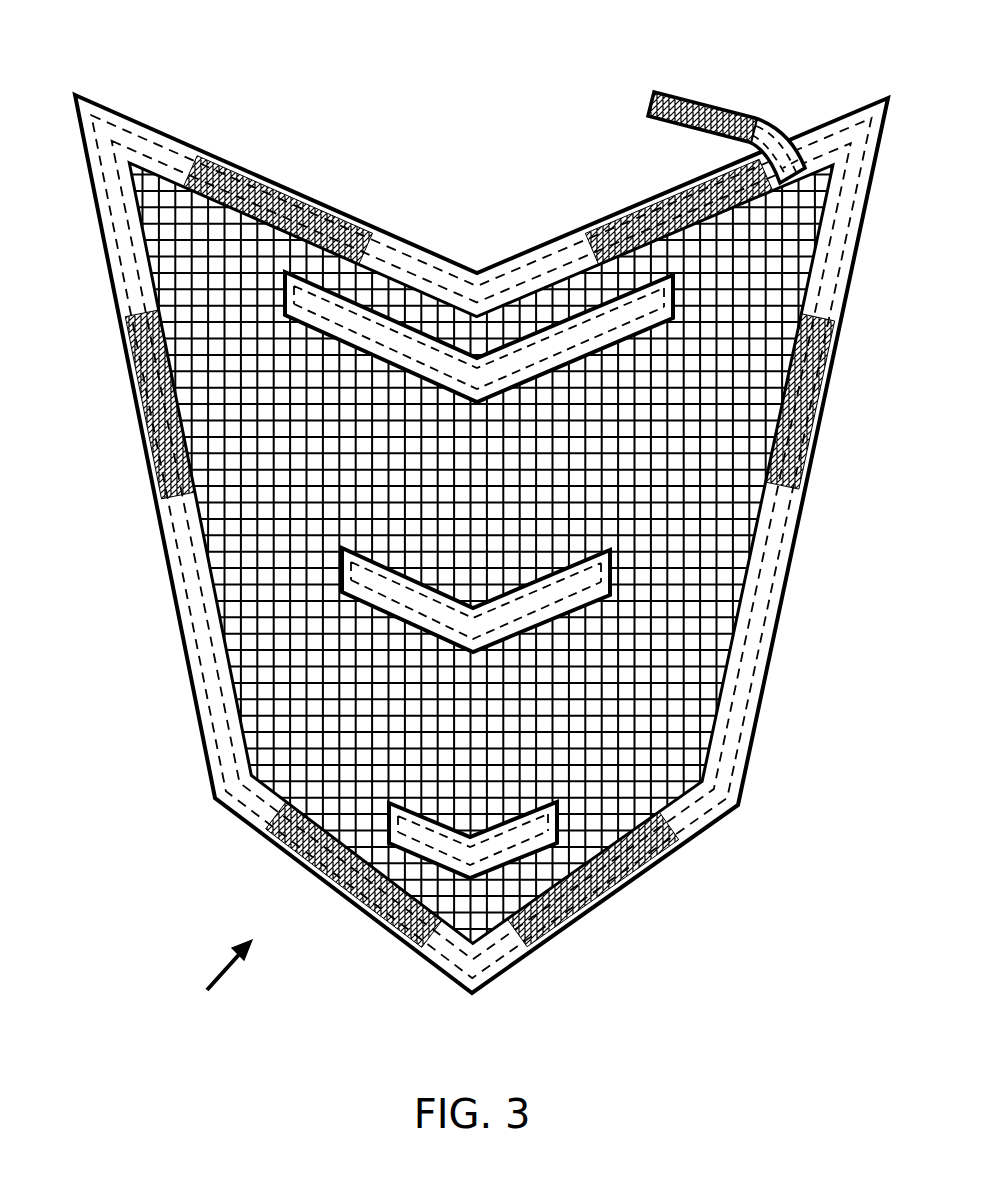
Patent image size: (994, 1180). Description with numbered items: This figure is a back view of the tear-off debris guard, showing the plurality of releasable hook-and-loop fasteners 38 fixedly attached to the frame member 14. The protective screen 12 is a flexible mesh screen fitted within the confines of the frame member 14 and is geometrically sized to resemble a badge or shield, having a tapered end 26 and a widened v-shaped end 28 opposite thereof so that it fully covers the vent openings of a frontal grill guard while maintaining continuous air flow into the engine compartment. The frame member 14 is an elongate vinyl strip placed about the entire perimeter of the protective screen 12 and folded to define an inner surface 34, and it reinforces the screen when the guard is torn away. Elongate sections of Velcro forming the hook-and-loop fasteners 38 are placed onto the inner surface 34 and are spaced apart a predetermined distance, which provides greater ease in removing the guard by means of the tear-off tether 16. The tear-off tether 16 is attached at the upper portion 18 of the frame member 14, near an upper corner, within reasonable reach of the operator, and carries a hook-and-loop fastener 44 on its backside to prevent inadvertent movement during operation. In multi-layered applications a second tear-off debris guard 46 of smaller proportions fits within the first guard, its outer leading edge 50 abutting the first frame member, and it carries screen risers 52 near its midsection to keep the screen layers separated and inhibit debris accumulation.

The protective screen 12 is at (255, 598).
The frame member 14 is at (750, 742).
The tear-off tether 16 is at (780, 130).
The upper portion 18 is at (153, 127).
The tapered end 26 is at (423, 960).
The widened v-shaped end 28 is at (407, 242).
The inner surface 34 is at (235, 817).
The releasable hook-and-loop fasteners 38 is at (625, 888).
The hook-and-loop fastener 44 is at (694, 92).
The second tear-off debris guard 46 is at (212, 976).
The outer leading edge 50 is at (782, 614).
The screen risers 52 is at (378, 608).